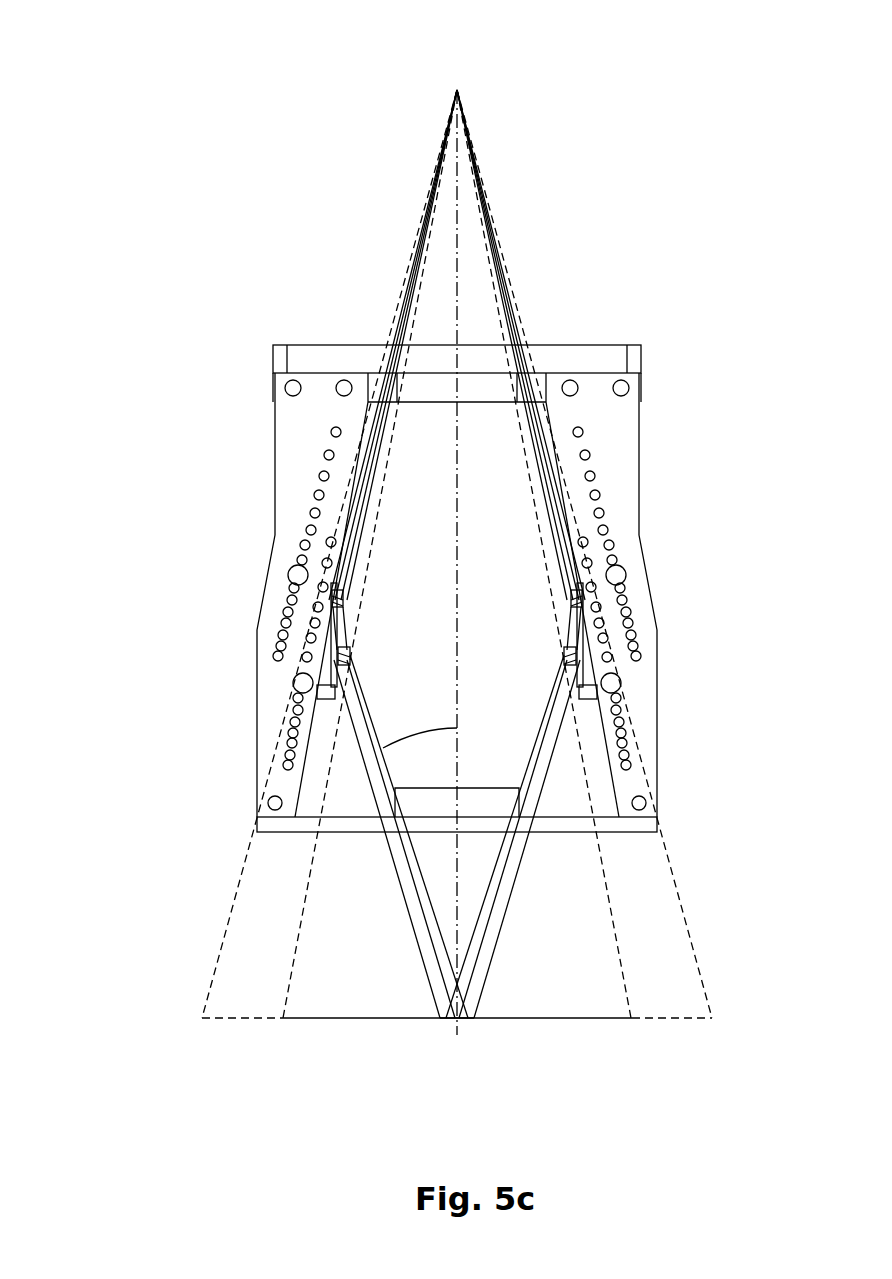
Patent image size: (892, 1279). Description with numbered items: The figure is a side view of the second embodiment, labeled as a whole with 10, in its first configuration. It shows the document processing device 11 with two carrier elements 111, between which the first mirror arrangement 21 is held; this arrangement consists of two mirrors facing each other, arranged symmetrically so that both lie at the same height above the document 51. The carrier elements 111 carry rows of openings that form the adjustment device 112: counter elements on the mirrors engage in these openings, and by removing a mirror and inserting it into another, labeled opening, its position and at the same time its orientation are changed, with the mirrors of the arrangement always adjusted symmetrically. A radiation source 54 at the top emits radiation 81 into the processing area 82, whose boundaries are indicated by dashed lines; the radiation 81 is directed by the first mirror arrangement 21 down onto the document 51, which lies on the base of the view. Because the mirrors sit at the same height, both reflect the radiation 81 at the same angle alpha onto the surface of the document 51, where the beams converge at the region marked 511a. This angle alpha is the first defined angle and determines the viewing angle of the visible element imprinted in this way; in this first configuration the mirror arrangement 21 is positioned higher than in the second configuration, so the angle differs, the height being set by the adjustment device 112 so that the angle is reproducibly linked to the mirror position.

The laser processing device 10 is at (160, 110).
The document processing device 11 is at (672, 384).
The carrier elements 111 is at (285, 442).
The adjustment device 112 is at (283, 613).
The first mirror arrangement 21 is at (328, 678).
The radiation source 54 is at (457, 90).
The radiation 81 is at (433, 912).
The processing area 82 is at (683, 903).
The document 51 is at (545, 1020).
The focal point 511a is at (445, 1020).